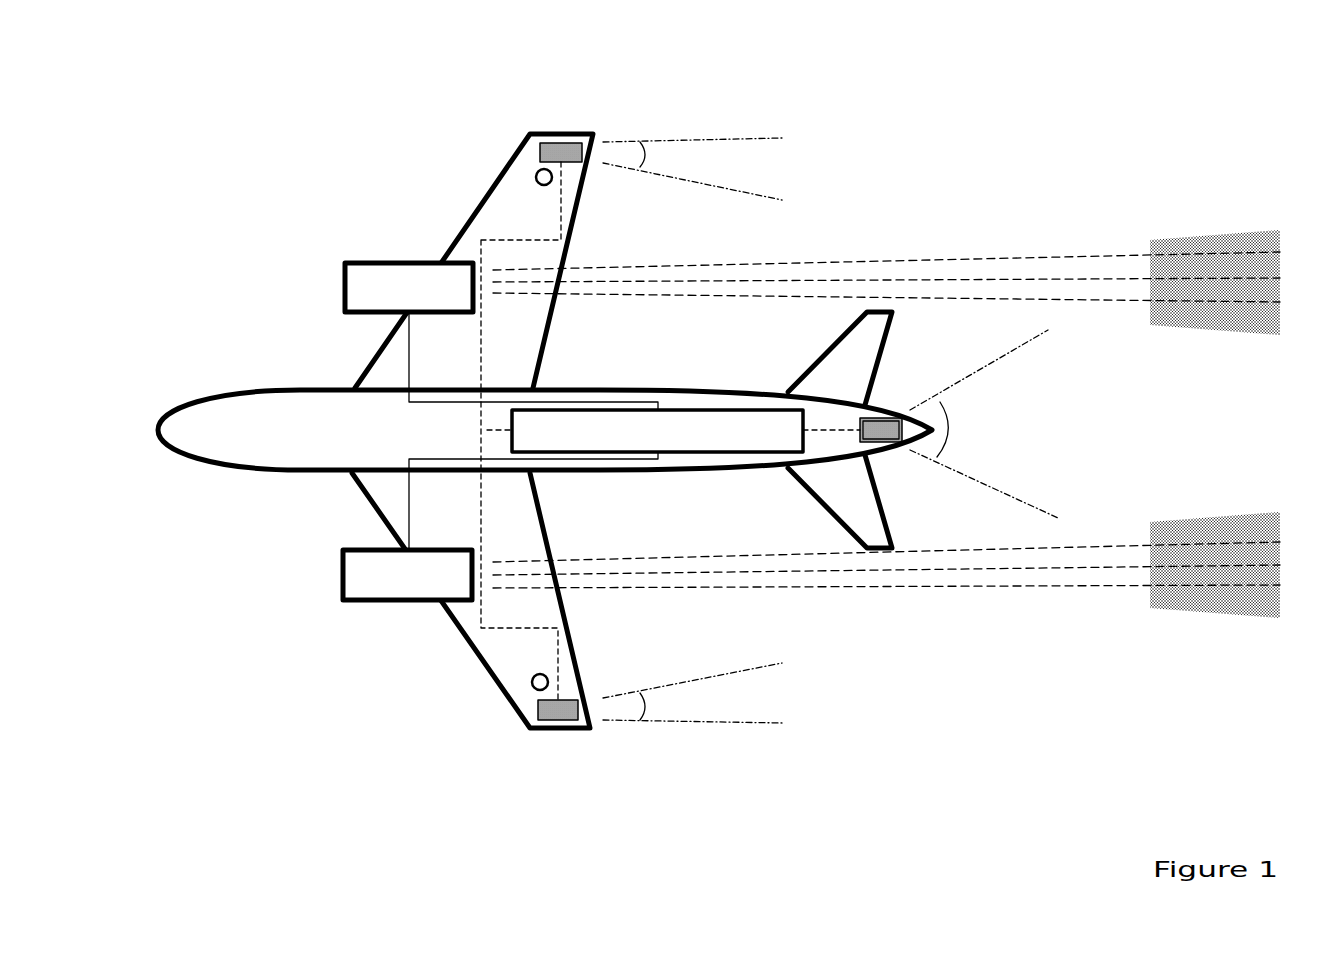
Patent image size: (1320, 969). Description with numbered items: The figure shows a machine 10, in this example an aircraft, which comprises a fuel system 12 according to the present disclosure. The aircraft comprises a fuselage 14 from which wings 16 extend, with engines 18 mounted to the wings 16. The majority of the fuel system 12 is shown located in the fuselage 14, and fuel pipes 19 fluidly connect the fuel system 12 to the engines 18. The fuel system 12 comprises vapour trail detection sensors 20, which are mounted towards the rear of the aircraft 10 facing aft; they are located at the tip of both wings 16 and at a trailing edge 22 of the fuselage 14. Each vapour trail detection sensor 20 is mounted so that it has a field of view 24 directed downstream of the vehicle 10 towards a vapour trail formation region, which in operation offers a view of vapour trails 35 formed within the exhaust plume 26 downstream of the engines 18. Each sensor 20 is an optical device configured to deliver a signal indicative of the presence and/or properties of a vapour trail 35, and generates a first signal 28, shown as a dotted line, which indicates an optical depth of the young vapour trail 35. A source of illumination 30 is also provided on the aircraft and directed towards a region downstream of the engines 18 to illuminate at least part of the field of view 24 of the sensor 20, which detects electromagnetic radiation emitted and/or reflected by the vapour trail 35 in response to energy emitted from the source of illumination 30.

The machine 10 is at (264, 102).
The fuel system 12 is at (688, 437).
The fuselage 14 is at (302, 475).
The wings 16 is at (470, 648).
The engines 18 is at (343, 287).
The fuel pipes 19 is at (408, 355).
The vapour trail detection sensor 20 is at (562, 142).
The trailing edge 22 is at (897, 407).
The field of view 24 is at (753, 160).
The exhaust plume 26 is at (630, 272).
The first signal 28 is at (522, 238).
The source of illumination 30 is at (537, 176).
The vapour trail 35 is at (1195, 328).